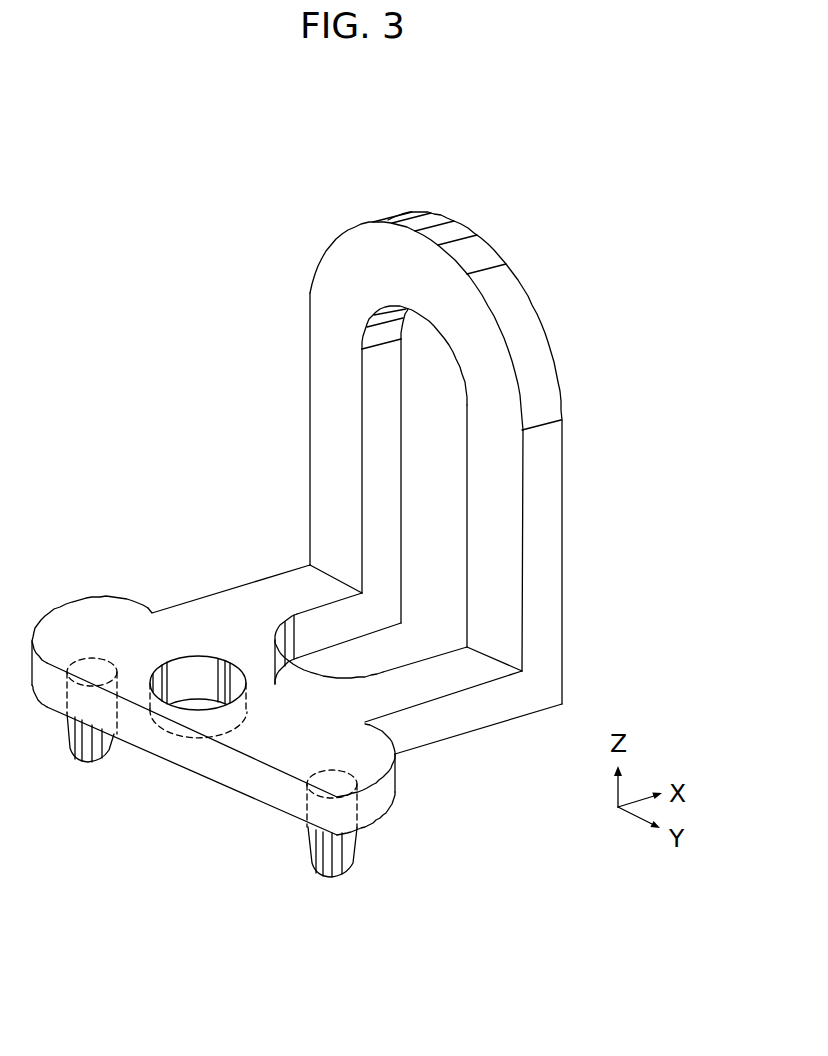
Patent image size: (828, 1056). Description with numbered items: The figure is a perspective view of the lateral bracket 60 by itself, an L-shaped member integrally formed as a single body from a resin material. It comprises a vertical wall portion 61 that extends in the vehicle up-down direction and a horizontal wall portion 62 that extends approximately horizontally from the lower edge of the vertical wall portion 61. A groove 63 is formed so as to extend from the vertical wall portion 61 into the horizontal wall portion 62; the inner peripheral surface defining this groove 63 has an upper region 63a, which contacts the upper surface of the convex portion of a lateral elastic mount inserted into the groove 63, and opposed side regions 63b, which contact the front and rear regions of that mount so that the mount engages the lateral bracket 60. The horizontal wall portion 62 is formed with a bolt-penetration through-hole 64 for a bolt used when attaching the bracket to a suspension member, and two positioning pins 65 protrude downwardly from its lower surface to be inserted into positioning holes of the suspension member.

The lateral bracket 60 is at (544, 203).
The vertical wall portion 61 is at (334, 359).
The horizontal wall portion 62 is at (241, 617).
The groove 63 is at (437, 558).
The upper region of the inner peripheral surface 63a is at (387, 317).
The opposed side regions of the inner peripheral surface 63b is at (382, 362).
The bolt-penetration through-hole 64 is at (200, 753).
The positioning pin 65 is at (72, 752).